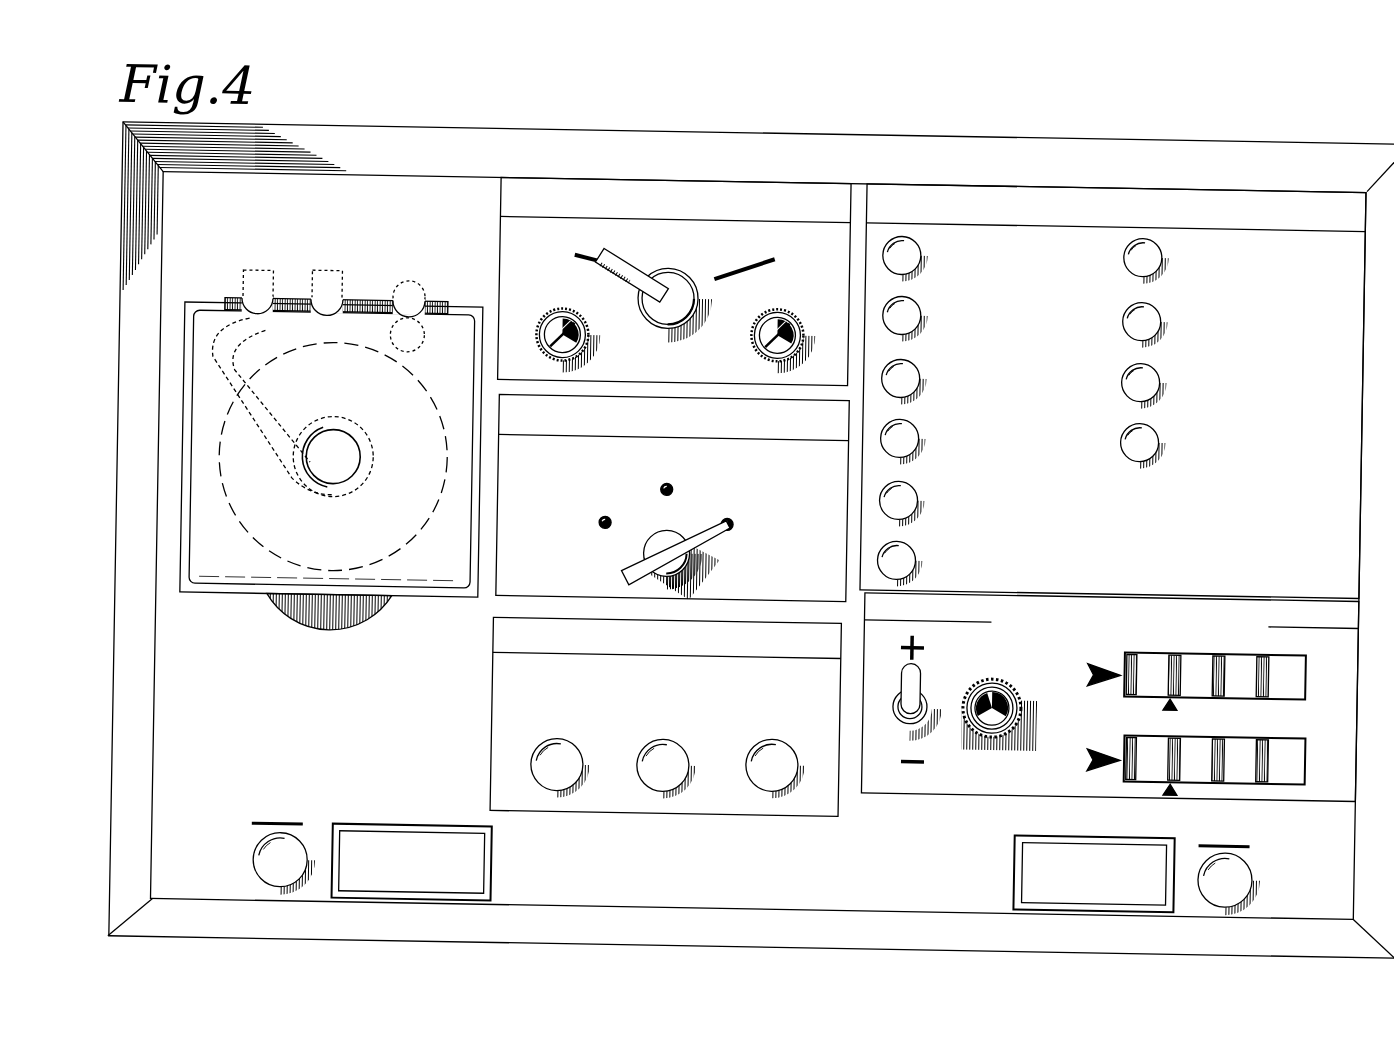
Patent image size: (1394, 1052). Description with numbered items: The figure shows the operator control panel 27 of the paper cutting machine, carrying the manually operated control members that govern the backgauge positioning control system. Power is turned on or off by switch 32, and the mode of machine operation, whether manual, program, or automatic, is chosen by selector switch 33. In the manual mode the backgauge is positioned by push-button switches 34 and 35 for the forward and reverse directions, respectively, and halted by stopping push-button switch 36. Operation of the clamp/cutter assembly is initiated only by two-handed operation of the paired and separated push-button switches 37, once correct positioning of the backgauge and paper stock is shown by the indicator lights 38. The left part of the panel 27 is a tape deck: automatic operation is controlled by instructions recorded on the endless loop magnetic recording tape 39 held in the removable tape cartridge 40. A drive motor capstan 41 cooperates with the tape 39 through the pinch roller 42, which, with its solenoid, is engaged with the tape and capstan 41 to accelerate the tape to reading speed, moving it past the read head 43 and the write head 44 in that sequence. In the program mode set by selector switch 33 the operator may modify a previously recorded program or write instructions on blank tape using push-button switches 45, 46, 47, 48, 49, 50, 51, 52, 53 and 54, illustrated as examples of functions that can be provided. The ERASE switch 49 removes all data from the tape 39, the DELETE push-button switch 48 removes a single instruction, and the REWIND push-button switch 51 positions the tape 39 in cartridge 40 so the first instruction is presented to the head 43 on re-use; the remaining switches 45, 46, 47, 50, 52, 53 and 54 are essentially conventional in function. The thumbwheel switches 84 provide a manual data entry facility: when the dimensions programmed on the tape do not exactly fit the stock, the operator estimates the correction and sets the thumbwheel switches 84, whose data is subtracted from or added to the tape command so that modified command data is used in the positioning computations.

The operator control panel 27 is at (336, 734).
The power switch 32 is at (697, 301).
The selector switch 33 is at (650, 548).
The forward push-button switch 34 is at (545, 777).
The reverse push-button switch 35 is at (760, 773).
The stopping push-button switch 36 is at (652, 775).
The paired push-button switches 37 is at (268, 860).
The indicator lights 38 is at (437, 845).
The magnetic recording tape 39 is at (232, 352).
The tape cartridge 40 is at (238, 577).
The drive motor capstan 41 is at (404, 308).
The pinch roller 42 is at (388, 340).
The read head 43 is at (260, 305).
The write head 44 is at (322, 305).
The push-button switch 45 is at (912, 267).
The push-button switch 46 is at (912, 325).
The push-button switch 47 is at (912, 386).
The DELETE push-button switch 48 is at (912, 446).
The ERASE switch 49 is at (912, 507).
The push-button switch 50 is at (913, 555).
The REWIND push-button switch 51 is at (1127, 262).
The push-button switch 52 is at (1128, 325).
The push-button switch 53 is at (1128, 386).
The push-button switch 54 is at (1128, 446).
The thumbwheel switches 84 is at (1080, 725).